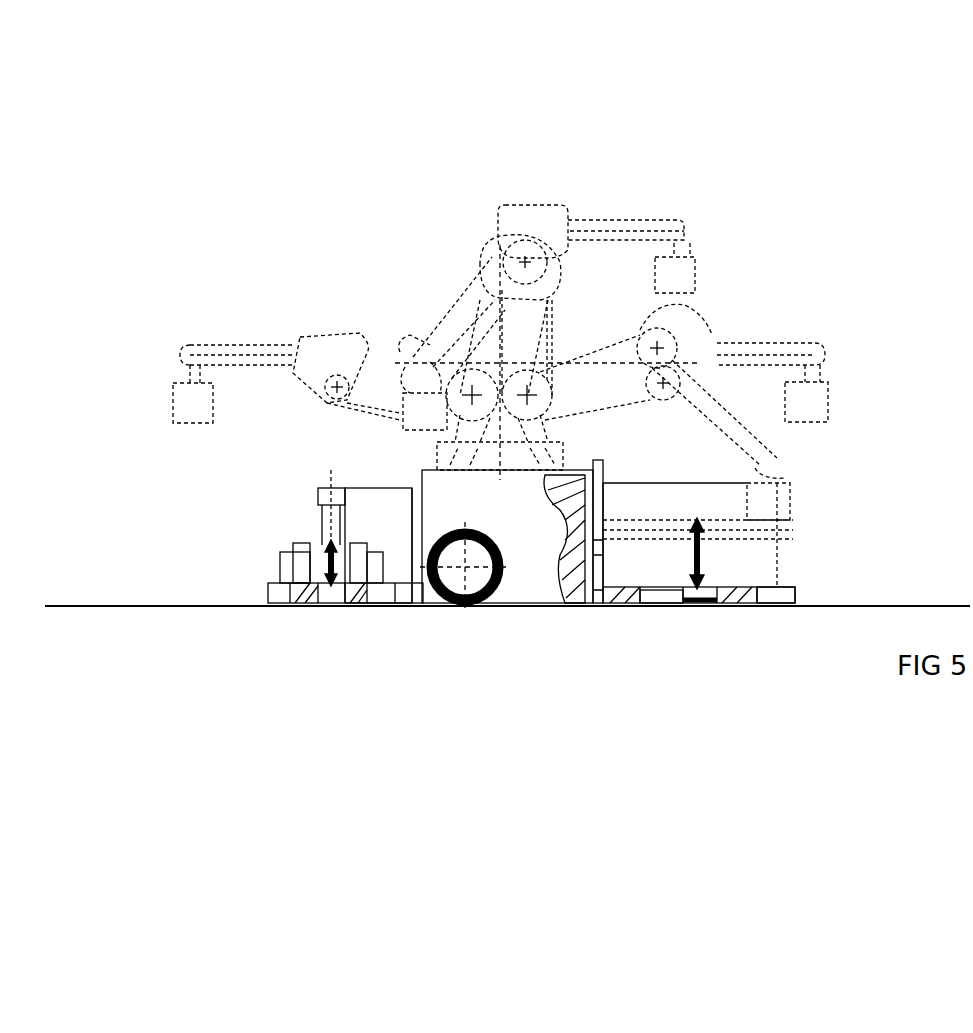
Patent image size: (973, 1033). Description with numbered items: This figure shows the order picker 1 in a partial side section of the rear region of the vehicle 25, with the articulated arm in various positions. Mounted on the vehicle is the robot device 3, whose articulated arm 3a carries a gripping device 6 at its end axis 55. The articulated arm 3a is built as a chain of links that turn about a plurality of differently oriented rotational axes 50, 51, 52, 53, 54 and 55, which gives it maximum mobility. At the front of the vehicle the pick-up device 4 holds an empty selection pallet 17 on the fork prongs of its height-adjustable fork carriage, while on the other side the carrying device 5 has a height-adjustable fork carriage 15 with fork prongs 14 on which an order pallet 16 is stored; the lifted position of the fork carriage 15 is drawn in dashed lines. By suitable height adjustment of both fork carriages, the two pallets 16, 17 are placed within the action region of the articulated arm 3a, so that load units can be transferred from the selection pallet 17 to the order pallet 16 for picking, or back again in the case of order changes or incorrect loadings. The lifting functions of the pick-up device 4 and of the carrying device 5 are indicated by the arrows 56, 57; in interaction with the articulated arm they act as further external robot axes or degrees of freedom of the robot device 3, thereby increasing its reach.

The order picker 1 is at (728, 227).
The robot device 3 is at (534, 205).
The articulated arm 3a is at (593, 217).
The pick-up device 4 is at (317, 498).
The carrying device 5 is at (603, 560).
The gripping device 6 is at (822, 395).
The fork prongs 14 is at (725, 597).
The fork carriage 15 is at (590, 580).
The order pallet 16 is at (797, 585).
The selection pallet 17 is at (268, 597).
The vehicle 25 is at (527, 602).
The rotational axis 50 is at (500, 445).
The rotational axis 51 is at (480, 395).
The rotational axis 52 is at (333, 387).
The rotational axis 53 is at (243, 353).
The rotational axis 54 is at (187, 350).
The end axis 55 is at (193, 393).
The arrow 56 is at (315, 585).
The arrow 57 is at (760, 607).